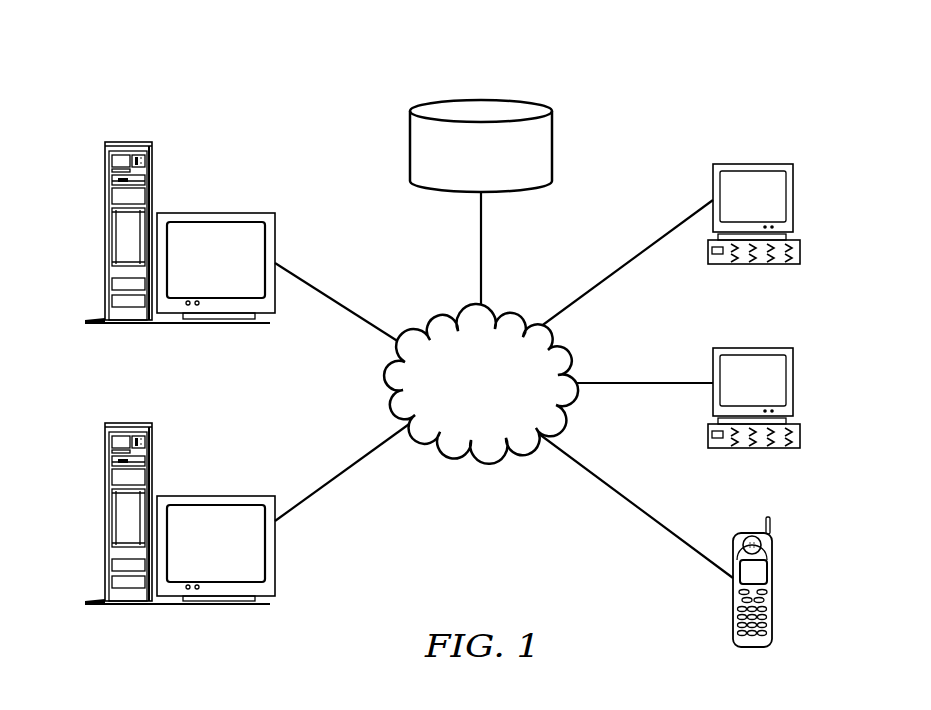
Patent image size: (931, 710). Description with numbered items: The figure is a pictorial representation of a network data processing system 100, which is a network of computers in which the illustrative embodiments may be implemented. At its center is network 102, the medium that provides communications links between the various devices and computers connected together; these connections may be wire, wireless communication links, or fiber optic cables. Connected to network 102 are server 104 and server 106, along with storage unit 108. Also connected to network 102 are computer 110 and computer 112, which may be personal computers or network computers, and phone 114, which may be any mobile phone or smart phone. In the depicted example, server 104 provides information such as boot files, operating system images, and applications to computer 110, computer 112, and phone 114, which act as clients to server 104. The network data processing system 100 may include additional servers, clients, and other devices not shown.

The network data processing system 100 is at (270, 70).
The network 102 is at (472, 443).
The server 104 is at (105, 232).
The server 106 is at (105, 515).
The storage unit 108 is at (554, 147).
The computer 110 is at (793, 197).
The computer 112 is at (793, 381).
The phone 114 is at (772, 598).